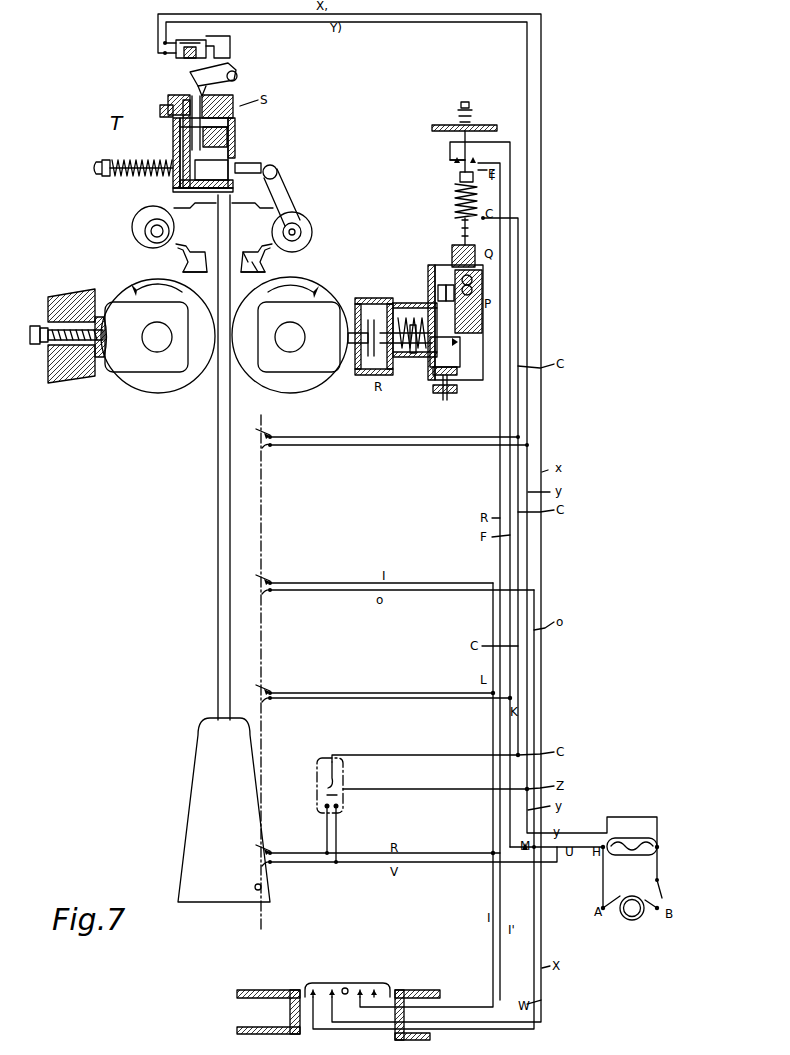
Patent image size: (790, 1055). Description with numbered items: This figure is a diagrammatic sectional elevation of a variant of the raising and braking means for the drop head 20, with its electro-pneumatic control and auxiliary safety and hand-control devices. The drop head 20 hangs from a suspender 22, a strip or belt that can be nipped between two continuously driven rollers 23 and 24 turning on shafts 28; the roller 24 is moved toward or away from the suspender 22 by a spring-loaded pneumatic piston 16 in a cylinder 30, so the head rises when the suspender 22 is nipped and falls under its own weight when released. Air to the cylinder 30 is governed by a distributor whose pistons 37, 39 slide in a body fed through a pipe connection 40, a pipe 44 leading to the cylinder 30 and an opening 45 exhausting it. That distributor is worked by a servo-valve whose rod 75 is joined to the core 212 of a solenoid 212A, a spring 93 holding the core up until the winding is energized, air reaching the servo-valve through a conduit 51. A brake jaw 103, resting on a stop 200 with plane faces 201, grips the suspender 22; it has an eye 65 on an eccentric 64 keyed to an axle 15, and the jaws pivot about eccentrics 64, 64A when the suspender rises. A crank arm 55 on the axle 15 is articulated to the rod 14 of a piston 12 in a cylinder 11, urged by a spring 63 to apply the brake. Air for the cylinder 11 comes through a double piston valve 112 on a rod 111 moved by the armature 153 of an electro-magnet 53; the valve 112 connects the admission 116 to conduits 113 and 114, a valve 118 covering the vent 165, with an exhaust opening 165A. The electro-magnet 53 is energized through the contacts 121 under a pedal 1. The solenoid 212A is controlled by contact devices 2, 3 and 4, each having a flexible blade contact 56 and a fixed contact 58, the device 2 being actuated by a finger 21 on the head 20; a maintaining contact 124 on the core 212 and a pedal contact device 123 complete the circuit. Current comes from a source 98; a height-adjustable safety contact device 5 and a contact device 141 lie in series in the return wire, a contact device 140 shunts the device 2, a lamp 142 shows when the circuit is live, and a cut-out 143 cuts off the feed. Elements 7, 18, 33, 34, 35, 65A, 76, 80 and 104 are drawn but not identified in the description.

The pedal 1 is at (348, 986).
The contact device 2 is at (412, 850).
The contact device 3 is at (390, 688).
The contact device 4 is at (401, 579).
The safety contact device 5 is at (398, 433).
The stem 7 is at (190, 96).
The cylinder 11 is at (176, 188).
The piston 12 is at (222, 170).
The rod 14 is at (248, 163).
The axle 15 is at (310, 240).
The spring-loaded pneumatic piston 16 is at (365, 372).
The spring 18 is at (406, 360).
The drop head 20 is at (200, 758).
The finger 21 is at (262, 887).
The suspender 22 is at (218, 460).
The roller 23 is at (153, 395).
The roller 24 is at (258, 382).
The shaft 28 is at (157, 345).
The cylinder 30 is at (362, 302).
The screw 33 is at (60, 340).
The block 34 is at (175, 370).
The nut 35 is at (48, 326).
The piston 37 is at (438, 292).
The piston 39 is at (446, 290).
The pipe connection 40 is at (470, 305).
The pipe 44 is at (400, 310).
The opening 45 is at (462, 350).
The conduit 51 is at (468, 286).
The electro-magnet 53 is at (220, 48).
The crank arm 55 is at (284, 186).
The flexible blade contact 56 is at (262, 431).
The fixed contact 58 is at (260, 447).
The spring 63 is at (118, 178).
The eccentric 64 is at (308, 230).
The eccentric 64A is at (146, 229).
The eye 65 is at (305, 216).
The pivot 65A is at (140, 210).
The rod 75 is at (472, 256).
The stem 76 is at (458, 368).
The pad 80 is at (99, 360).
The spring 93 is at (472, 108).
The source 98 is at (628, 920).
The jaw 103 is at (258, 256).
The pin 104 is at (150, 236).
The rod 111 is at (236, 100).
The double piston valve 112 is at (174, 135).
The conduit 113 is at (228, 142).
The conduit 114 is at (178, 146).
The compressed air admission 116 is at (240, 121).
The valve 118 is at (182, 127).
The pedal contact device 121 is at (313, 1000).
The pedal contact device 123 is at (362, 998).
The maintaining contact 124 is at (474, 160).
The contact device 140 is at (342, 808).
The contact device 141 is at (328, 780).
The indicator lamp 142 is at (630, 839).
The cut-out 143 is at (668, 894).
The armature 153 is at (220, 70).
The vent 165 is at (162, 110).
The exhaust opening 165A is at (236, 152).
The stop 200 is at (224, 276).
The plane face 201 is at (251, 249).
The core 212 is at (460, 176).
The solenoid 212A is at (456, 200).